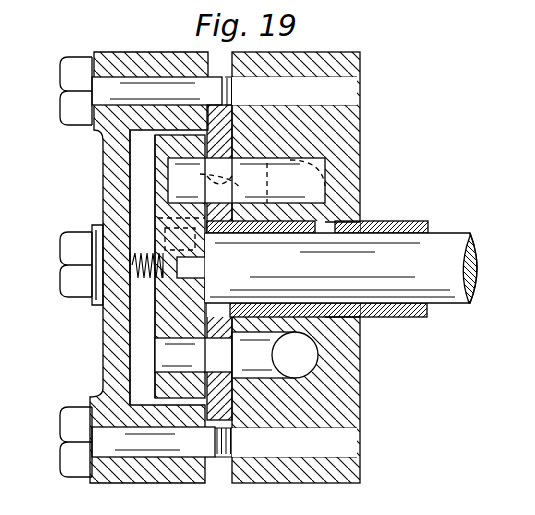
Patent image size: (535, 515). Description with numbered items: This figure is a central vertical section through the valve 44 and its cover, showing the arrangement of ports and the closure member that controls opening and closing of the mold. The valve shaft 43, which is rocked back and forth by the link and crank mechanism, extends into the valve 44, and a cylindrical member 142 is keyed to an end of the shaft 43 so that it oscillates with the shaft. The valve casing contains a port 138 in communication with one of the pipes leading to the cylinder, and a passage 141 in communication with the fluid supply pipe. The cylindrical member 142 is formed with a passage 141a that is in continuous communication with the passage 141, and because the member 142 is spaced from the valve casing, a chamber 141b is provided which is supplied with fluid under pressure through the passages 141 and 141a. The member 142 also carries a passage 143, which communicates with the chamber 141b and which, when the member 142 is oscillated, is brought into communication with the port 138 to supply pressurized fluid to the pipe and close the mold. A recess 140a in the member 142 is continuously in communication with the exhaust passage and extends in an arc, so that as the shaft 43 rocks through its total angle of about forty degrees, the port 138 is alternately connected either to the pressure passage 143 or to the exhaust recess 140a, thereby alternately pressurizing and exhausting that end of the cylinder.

The valve 44 is at (136, 51).
The valve shaft 43 is at (445, 243).
The port 138 is at (262, 181).
The recess 140a is at (176, 173).
The cylindrical member 142 is at (155, 198).
The passage 143 is at (195, 252).
The passage 141 is at (297, 356).
The passage 141a is at (160, 360).
The chamber 141b is at (137, 325).